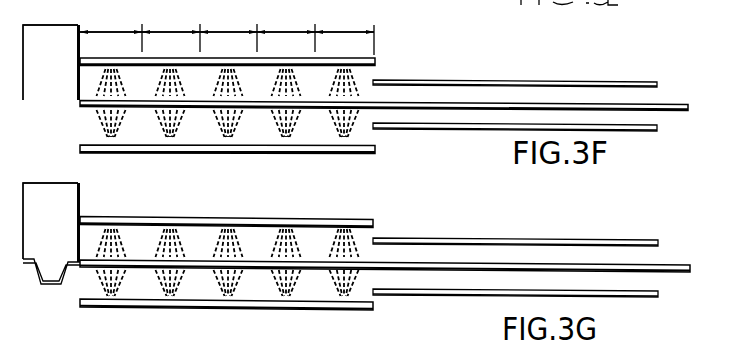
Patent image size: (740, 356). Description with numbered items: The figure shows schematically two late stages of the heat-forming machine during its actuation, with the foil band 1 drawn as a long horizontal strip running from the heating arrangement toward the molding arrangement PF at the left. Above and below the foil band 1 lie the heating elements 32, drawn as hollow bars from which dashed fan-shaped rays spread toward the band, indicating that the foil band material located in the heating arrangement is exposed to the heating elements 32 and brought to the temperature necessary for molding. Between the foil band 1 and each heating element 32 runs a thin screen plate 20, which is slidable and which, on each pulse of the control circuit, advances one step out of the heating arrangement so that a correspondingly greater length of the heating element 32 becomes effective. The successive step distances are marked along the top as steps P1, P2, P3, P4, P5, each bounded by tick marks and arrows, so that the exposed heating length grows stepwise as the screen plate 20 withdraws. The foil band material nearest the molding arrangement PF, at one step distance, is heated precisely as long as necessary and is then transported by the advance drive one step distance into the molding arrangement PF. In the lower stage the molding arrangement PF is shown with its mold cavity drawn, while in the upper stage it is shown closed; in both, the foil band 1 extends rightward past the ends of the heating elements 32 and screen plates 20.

In FIG. 3F, the foil band 1 is at (680, 104).
In FIG. 3G, the foil band 1 is at (681, 265).
In FIG. 3F, the screen plate 20 is at (626, 88).
In FIG. 3G, the screen plate 20 is at (626, 247).
In FIG. 3F, the heating element 32 is at (375, 61).
In FIG. 3G, the heating element 32 is at (373, 222).
In FIG. 3F, the molding arrangement PF is at (52, 38).
In FIG. 3G, the molding arrangement PF is at (53, 195).
In FIG. 3F, the step P1 is at (111, 17).
In FIG. 3F, the step P2 is at (171, 17).
In FIG. 3F, the step P3 is at (228, 17).
In FIG. 3F, the step P4 is at (286, 17).
In FIG. 3F, the step P5 is at (344, 17).